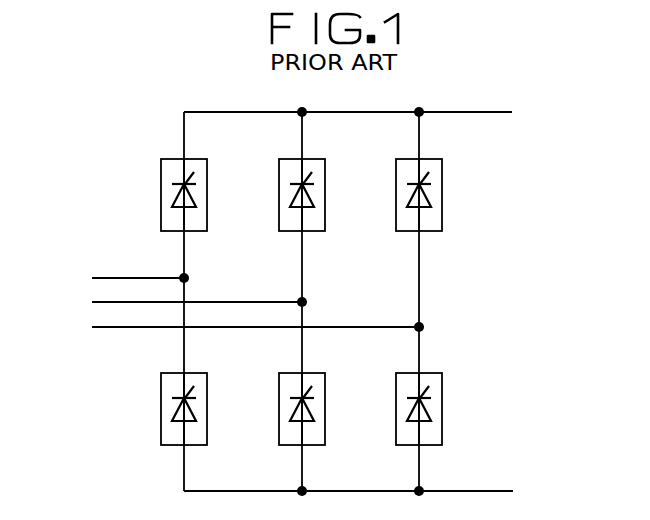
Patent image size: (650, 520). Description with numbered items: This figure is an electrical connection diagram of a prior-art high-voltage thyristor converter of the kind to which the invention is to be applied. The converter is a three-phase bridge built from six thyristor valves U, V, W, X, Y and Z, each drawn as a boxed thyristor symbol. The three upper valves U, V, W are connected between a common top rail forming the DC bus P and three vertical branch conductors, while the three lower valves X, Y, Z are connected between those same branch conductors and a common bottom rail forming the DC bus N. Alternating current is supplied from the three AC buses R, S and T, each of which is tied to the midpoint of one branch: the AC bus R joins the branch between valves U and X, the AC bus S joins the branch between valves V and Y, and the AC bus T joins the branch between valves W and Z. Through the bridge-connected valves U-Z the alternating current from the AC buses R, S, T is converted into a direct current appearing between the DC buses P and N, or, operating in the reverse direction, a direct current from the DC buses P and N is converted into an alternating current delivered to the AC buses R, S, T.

The DC bus P is at (359, 113).
The DC bus N is at (360, 491).
The AC bus R is at (127, 278).
The AC bus S is at (186, 303).
The AC bus T is at (244, 328).
The valve U is at (207, 184).
The valve V is at (350, 178).
The valve W is at (467, 178).
The valve X is at (207, 398).
The valve Y is at (350, 392).
The valve Z is at (442, 398).